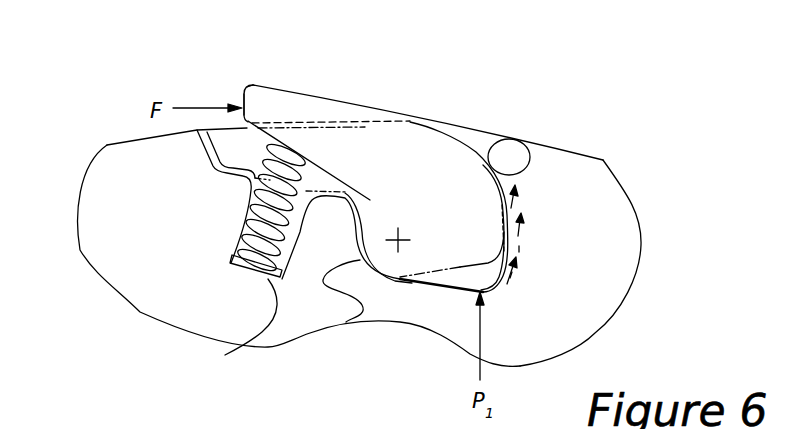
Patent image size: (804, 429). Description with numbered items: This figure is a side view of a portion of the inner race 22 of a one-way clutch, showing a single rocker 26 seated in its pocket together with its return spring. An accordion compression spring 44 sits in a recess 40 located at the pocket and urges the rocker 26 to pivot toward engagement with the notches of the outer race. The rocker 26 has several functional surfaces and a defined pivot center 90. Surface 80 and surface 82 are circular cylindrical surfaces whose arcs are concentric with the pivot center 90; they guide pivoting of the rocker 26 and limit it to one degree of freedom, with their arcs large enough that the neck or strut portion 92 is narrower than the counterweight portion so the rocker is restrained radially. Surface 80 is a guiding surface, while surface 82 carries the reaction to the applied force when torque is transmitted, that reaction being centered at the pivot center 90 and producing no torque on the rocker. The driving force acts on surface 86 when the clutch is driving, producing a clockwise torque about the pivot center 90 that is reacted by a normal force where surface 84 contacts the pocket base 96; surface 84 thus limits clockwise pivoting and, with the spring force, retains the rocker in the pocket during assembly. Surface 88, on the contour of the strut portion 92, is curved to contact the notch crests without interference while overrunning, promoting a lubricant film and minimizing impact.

The inner race 22 is at (617, 267).
The recess 40 is at (270, 347).
The accordion compression spring 44 is at (235, 218).
The rocker 26 is at (449, 223).
The guiding surface 80 is at (435, 285).
The reaction surface 82 is at (529, 146).
The pivot-limiting surface 84 is at (463, 289).
The force-receiving surface 86 is at (243, 93).
The strut contour surface 88 is at (330, 100).
The pivot center 90 is at (396, 236).
The strut portion 92 is at (268, 103).
The pocket base 96 is at (432, 286).